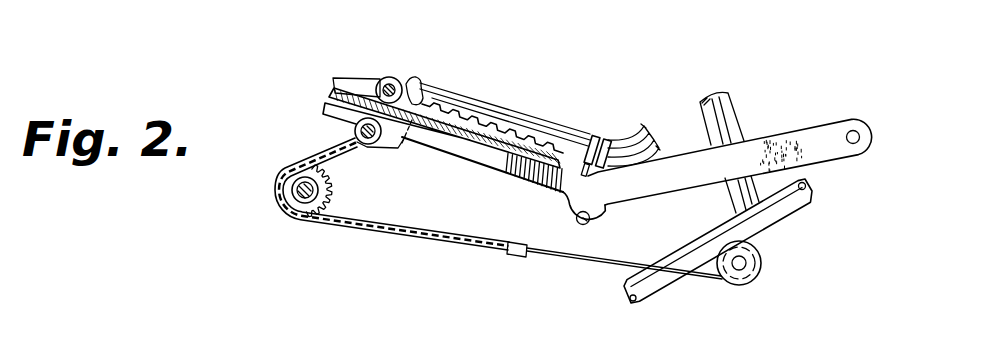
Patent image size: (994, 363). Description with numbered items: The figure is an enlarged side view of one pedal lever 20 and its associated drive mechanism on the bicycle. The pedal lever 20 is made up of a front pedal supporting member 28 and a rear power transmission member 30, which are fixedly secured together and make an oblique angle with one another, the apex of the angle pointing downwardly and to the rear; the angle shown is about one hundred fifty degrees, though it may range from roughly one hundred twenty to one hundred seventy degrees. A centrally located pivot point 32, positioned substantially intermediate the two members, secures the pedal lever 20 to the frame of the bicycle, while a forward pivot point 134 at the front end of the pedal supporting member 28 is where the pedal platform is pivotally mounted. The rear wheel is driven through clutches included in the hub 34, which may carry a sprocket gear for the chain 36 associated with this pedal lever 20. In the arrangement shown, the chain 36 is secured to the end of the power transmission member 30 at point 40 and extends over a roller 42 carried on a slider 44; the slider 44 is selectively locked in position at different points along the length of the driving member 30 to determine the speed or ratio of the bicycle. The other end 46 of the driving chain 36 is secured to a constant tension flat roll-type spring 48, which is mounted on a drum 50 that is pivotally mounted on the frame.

The pedal lever 20 is at (520, 183).
The front pedal supporting member 28 is at (676, 168).
The rear power transmission member 30 is at (478, 155).
The pivot point 32 is at (594, 219).
The hub 34 is at (310, 197).
The chain 36 is at (383, 236).
The point 40 is at (340, 90).
The roller 42 is at (355, 133).
The slider 44 is at (400, 146).
The other end of the driving chain 46 is at (512, 256).
The constant tension flat roll-type spring 48 is at (697, 278).
The drum 50 is at (762, 266).
The forward pivot point 134 is at (853, 130).